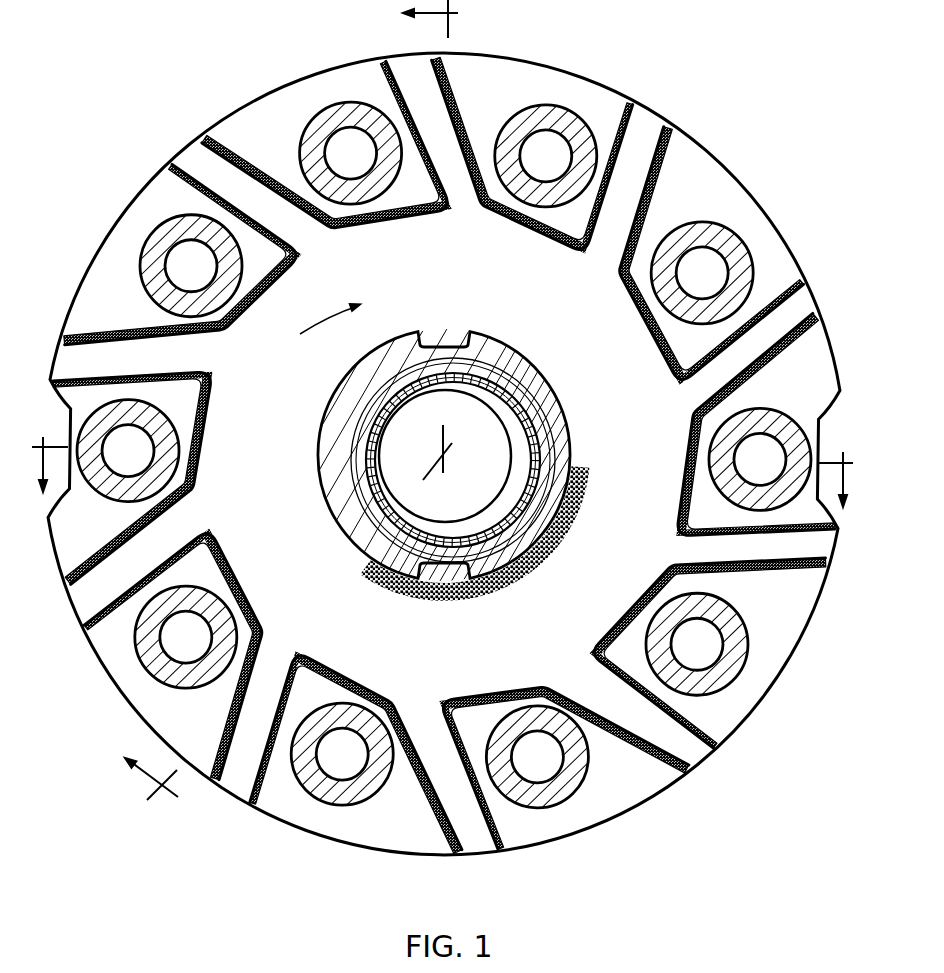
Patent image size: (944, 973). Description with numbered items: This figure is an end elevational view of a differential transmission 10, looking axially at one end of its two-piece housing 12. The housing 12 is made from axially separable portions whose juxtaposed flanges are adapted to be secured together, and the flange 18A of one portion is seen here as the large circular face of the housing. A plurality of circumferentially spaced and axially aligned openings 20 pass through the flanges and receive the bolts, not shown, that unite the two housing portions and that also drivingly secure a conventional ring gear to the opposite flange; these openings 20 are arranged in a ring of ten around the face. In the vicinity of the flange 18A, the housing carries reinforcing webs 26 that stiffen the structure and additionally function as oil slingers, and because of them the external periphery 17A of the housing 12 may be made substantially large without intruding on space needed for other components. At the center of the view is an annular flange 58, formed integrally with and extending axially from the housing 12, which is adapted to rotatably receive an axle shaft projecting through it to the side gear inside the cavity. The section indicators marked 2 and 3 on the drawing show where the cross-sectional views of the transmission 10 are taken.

The differential transmission 10 is at (444, 455).
The two-piece housing 12 is at (317, 330).
The external periphery 17A is at (657, 327).
The flange 18A is at (545, 88).
The openings 20 is at (715, 255).
The reinforcing webs 26 is at (632, 708).
The annular flange 58 is at (524, 400).
The section line 2- 2 is at (442, 456).
The section line 3- 3 is at (302, 408).